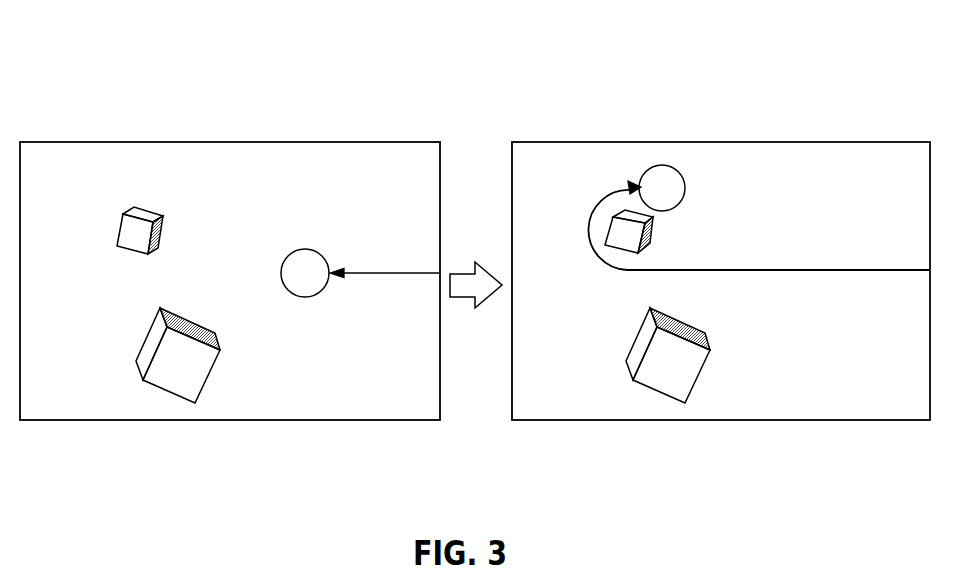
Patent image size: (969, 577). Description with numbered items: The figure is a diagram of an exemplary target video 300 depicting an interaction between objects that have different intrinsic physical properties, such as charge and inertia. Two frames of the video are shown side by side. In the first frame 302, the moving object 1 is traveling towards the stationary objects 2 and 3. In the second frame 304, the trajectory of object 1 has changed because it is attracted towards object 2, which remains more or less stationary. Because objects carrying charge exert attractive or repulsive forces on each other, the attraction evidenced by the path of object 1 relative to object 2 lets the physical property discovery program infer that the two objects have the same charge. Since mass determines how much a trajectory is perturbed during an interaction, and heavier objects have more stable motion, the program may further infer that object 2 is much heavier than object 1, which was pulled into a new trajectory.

The target video 300 is at (125, 58).
The first frame 302 is at (407, 392).
The second frame 304 is at (899, 392).
The object 1 is at (299, 284).
The object 2 is at (133, 248).
The object 3 is at (190, 381).